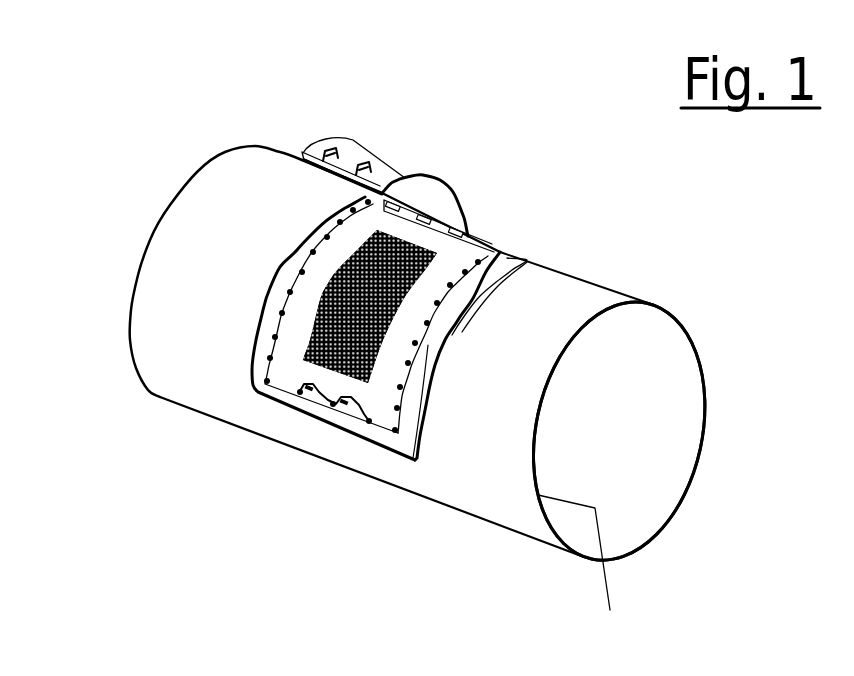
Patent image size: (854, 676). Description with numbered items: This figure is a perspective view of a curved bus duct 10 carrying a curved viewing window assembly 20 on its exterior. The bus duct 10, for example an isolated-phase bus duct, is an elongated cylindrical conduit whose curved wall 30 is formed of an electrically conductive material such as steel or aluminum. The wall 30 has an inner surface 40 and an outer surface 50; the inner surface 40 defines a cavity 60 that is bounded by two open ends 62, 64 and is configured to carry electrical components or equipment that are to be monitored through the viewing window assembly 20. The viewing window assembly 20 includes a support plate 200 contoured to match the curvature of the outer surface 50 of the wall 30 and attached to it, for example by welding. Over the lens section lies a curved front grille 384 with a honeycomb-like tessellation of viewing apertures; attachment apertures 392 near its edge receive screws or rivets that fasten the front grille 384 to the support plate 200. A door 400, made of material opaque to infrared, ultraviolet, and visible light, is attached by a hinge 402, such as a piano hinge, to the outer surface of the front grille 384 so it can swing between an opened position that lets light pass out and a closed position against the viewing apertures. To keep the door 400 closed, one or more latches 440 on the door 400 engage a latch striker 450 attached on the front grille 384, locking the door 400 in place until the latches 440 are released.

The curved bus duct 10 is at (418, 331).
The viewing window assembly 20 is at (260, 382).
The curved wall 30 is at (590, 317).
The inner surface 40 is at (610, 610).
The outer surface 50 is at (302, 190).
The cavity 60 is at (602, 470).
The open end 62 is at (150, 240).
The open end 64 is at (687, 453).
The support plate 200 is at (507, 257).
The front grille 384 is at (312, 282).
The attachment apertures 392 is at (393, 431).
The door 400 is at (397, 157).
The hinge 402 is at (473, 235).
The latches 440 is at (357, 167).
The latch striker 450 is at (332, 404).